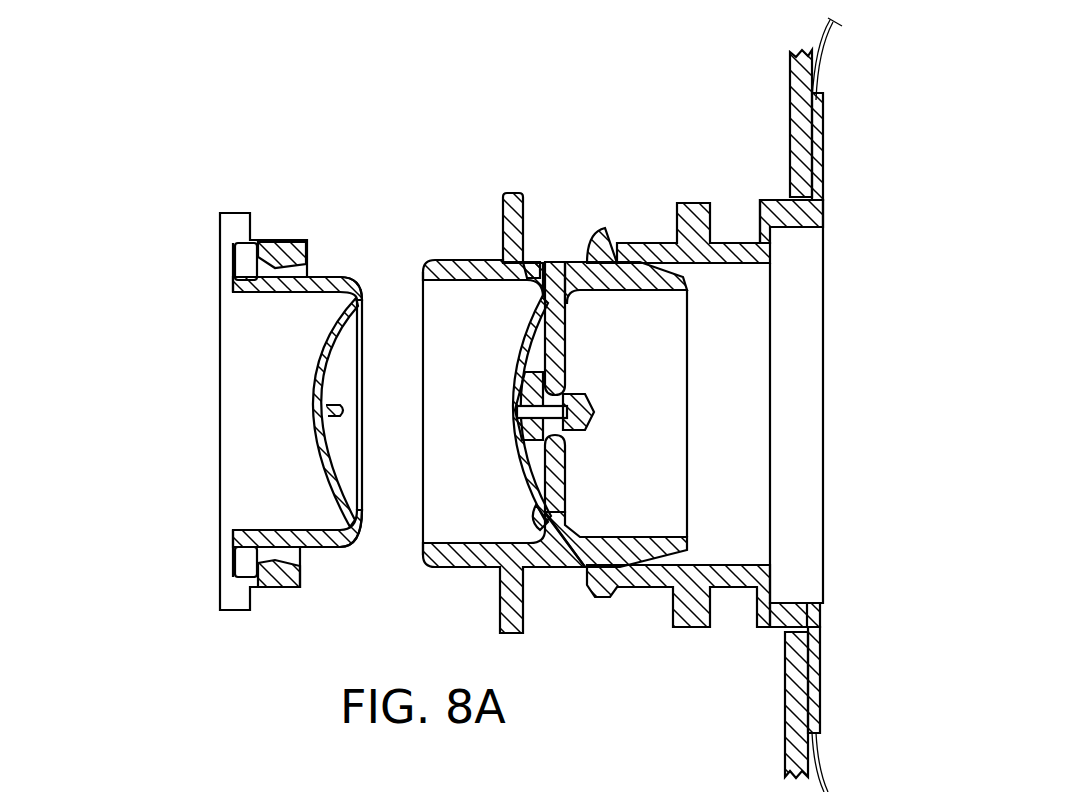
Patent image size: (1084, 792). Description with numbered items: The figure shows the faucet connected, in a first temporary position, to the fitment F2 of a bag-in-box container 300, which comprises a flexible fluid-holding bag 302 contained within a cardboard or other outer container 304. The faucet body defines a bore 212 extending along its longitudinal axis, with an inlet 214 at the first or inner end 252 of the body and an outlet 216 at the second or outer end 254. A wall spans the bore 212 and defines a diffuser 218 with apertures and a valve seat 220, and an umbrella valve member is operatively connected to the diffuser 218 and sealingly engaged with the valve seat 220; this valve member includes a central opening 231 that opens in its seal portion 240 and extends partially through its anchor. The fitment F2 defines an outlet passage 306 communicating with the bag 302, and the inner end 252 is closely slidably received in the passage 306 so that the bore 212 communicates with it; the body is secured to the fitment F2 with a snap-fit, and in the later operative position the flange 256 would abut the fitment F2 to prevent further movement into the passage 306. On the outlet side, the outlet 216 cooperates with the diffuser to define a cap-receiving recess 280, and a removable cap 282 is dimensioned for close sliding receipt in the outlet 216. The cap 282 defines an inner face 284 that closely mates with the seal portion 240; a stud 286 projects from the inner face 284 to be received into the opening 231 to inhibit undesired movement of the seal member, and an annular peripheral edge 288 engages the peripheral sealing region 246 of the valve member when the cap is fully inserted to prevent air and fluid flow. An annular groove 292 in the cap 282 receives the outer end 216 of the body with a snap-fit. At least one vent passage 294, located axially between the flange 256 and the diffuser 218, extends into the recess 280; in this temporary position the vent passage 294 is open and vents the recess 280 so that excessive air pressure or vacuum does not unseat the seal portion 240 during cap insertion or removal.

The bore 212 is at (722, 413).
The inlet 214 is at (691, 527).
The outlet 216 is at (420, 536).
The diffuser 218 is at (561, 340).
The valve seat 220 is at (539, 312).
The central opening 231 is at (511, 408).
The seal portion 240 is at (520, 472).
The peripheral sealing region 246 is at (536, 515).
The inner end 252 is at (795, 413).
The outer end 254 is at (425, 569).
The flange 256 is at (518, 191).
The cap-receiving recess 280 is at (482, 391).
The removable cap 282 is at (313, 486).
The inner face 284 is at (342, 377).
The stud 286 is at (340, 422).
The annular peripheral edge 288 is at (358, 542).
The annular groove 292 is at (299, 262).
The vent passage 294 is at (537, 260).
The bag-in-box container 300 is at (783, 745).
The fluid-holding bag 302 is at (823, 775).
The outer container 304 is at (788, 120).
The outlet passage 306 is at (748, 264).
The fitment F2 is at (640, 241).